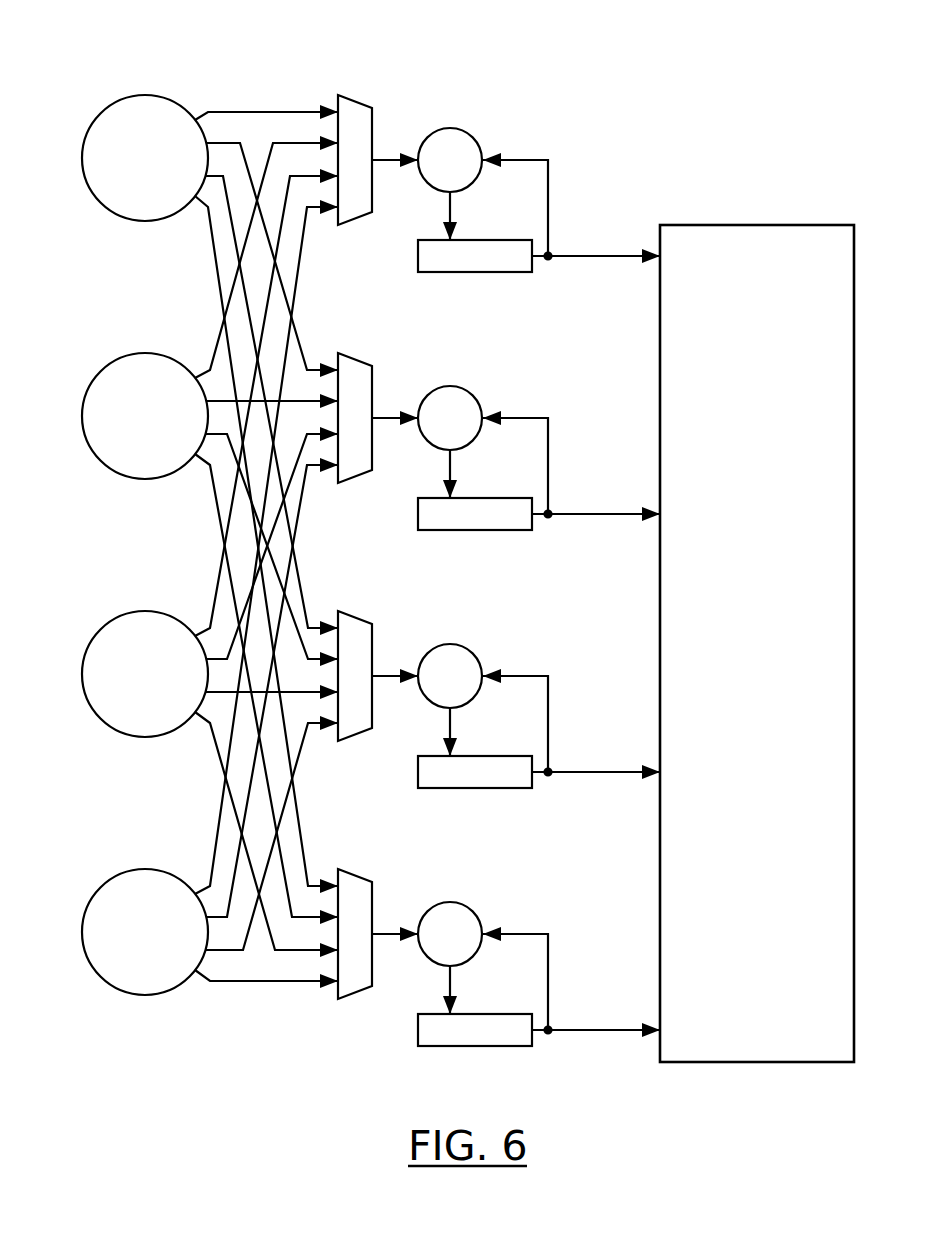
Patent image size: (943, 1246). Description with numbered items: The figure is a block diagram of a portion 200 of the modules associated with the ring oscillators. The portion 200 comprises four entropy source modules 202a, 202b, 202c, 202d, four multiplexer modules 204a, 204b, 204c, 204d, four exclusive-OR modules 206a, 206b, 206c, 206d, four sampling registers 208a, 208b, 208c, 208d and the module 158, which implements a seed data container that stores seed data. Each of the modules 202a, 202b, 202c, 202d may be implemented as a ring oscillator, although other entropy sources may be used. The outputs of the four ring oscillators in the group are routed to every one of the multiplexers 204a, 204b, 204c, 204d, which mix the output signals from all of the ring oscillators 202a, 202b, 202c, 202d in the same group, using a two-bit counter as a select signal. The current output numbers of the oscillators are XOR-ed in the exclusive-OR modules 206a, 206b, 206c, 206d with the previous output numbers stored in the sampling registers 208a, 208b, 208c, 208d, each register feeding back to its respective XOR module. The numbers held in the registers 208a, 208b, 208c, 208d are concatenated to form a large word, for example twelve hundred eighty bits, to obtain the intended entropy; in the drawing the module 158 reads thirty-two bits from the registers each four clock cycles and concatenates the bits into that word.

The portion 200 is at (400, 35).
The module 202a is at (139, 94).
The module 202b is at (139, 352).
The module 202c is at (139, 610).
The module 202d is at (139, 868).
The multiplexer module 204a is at (355, 102).
The multiplexer module 204b is at (355, 360).
The multiplexer module 204c is at (355, 618).
The multiplexer module 204d is at (355, 876).
The exclusive-OR module 206a is at (466, 131).
The exclusive-OR module 206b is at (466, 389).
The exclusive-OR module 206c is at (466, 647).
The exclusive-OR module 206d is at (466, 905).
The sampling register 208a is at (490, 272).
The sampling register 208b is at (490, 530).
The sampling register 208c is at (490, 788).
The sampling register 208d is at (490, 1046).
The module 158 is at (717, 225).